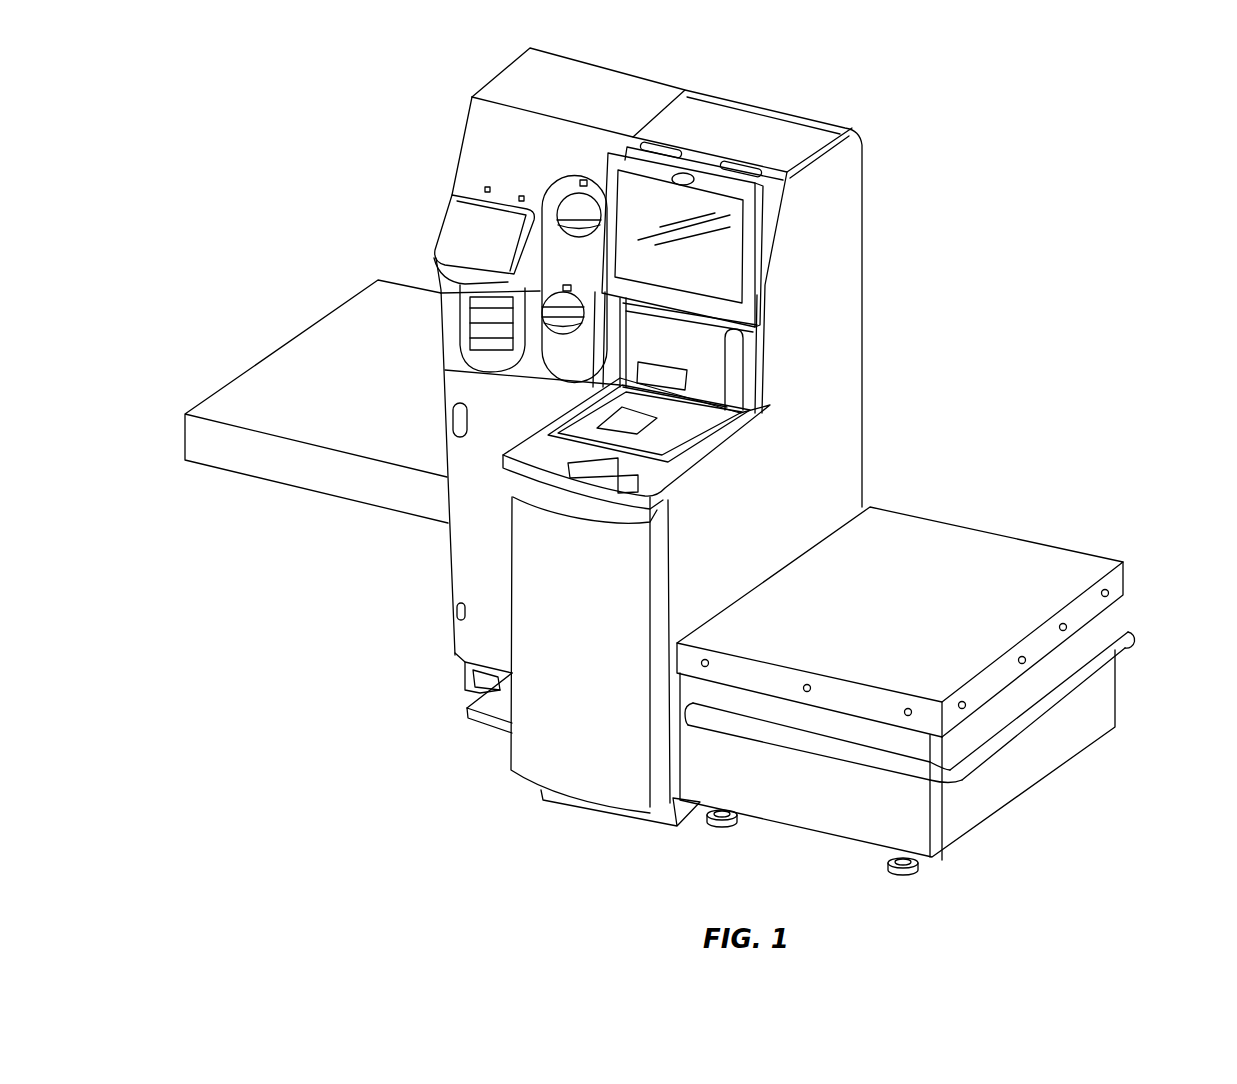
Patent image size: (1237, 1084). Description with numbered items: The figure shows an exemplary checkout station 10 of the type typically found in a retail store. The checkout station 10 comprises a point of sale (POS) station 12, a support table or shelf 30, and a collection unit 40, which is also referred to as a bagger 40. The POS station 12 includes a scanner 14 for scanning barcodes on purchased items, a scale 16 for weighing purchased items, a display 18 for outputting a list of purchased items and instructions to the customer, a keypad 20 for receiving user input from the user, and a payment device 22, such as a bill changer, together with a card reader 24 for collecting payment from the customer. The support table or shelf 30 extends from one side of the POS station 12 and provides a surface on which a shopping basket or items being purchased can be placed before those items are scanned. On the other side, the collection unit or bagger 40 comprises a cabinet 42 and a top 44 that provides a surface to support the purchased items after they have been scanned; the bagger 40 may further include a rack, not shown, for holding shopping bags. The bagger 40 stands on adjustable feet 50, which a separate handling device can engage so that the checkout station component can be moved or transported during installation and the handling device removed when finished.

The checkout station 10 is at (1033, 193).
The point of sale (POS) station 12 is at (866, 405).
The scanner 14 is at (596, 384).
The scale 16 is at (673, 434).
The display 18 is at (699, 268).
The keypad 20 is at (492, 255).
The payment device 22 is at (584, 270).
The card reader 24 is at (458, 325).
The support table or shelf 30 is at (323, 352).
The collection unit (bagger) 40 is at (947, 704).
The cabinet 42 is at (1037, 758).
The top 44 is at (1010, 563).
The adjustable feet 50 is at (727, 834).